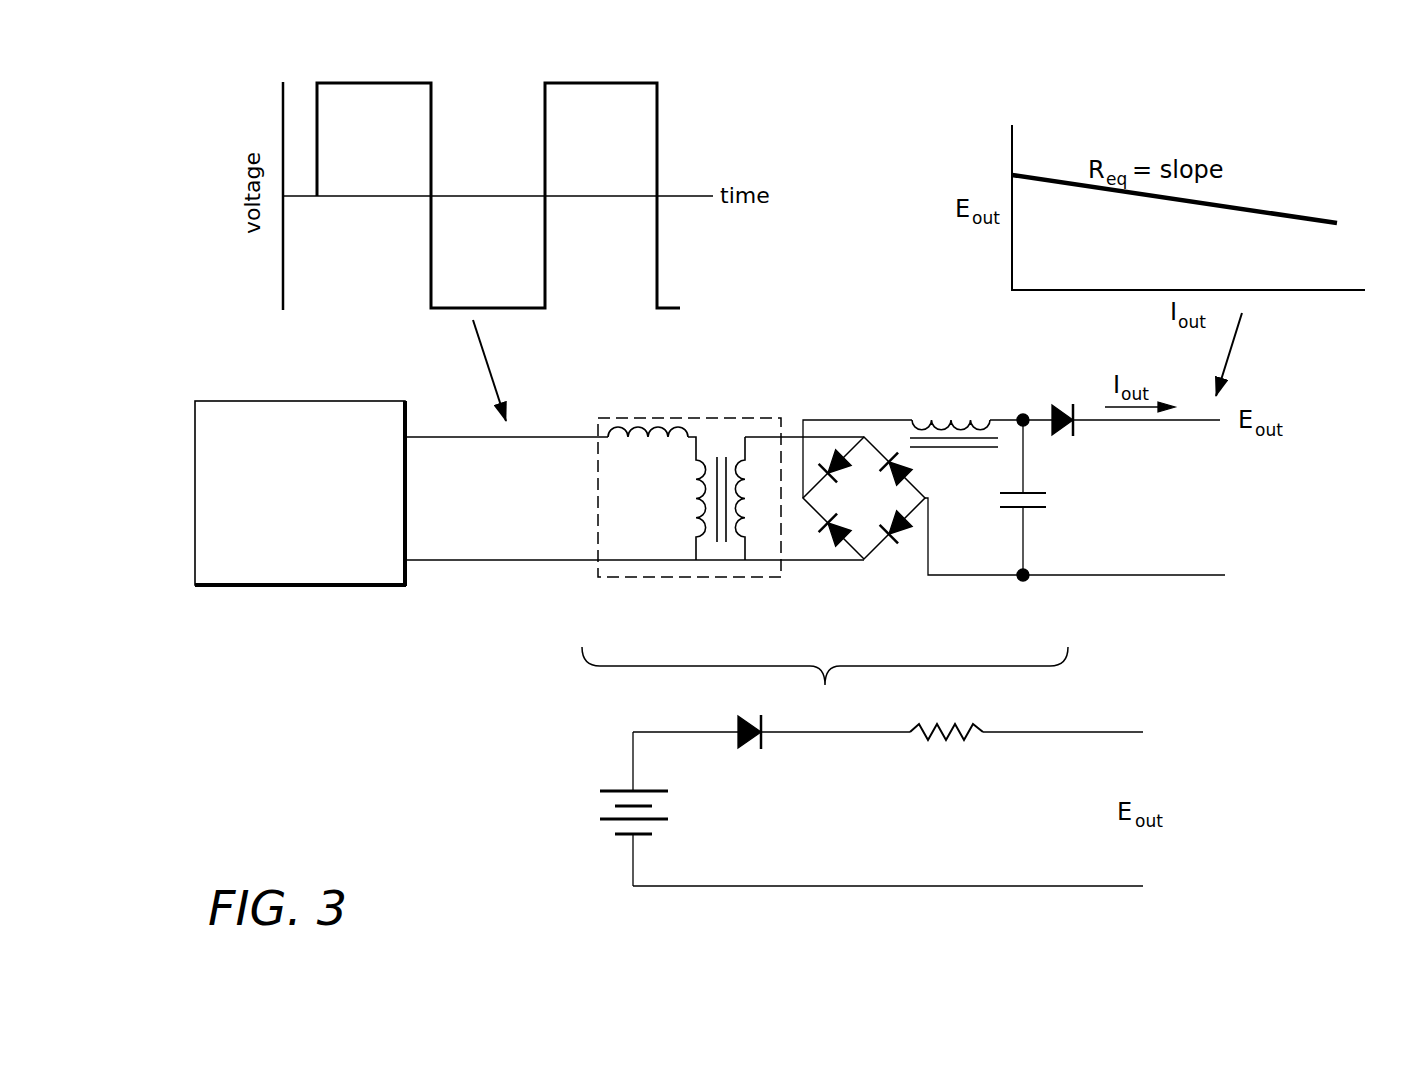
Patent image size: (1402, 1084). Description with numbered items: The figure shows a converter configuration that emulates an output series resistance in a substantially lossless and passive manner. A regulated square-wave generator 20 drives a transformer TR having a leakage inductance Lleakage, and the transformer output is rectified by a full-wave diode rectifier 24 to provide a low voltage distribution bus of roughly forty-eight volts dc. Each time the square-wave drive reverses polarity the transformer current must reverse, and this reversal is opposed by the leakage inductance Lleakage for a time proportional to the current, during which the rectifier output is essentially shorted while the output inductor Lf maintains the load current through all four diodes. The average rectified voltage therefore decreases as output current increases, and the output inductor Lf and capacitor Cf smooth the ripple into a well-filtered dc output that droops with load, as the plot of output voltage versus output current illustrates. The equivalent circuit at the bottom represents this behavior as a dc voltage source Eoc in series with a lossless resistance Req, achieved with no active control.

The square-wave generator 20 is at (309, 568).
The full-wave diode rectifier 24 is at (883, 562).
The transformer TR is at (682, 495).
The leakage inductance Lleakage is at (635, 388).
The output filter inductor Lf is at (954, 415).
The filter capacitor Cf is at (1041, 497).
The equivalent lossless series resistance Req is at (946, 753).
The open-circuit voltage source Eoc is at (658, 812).